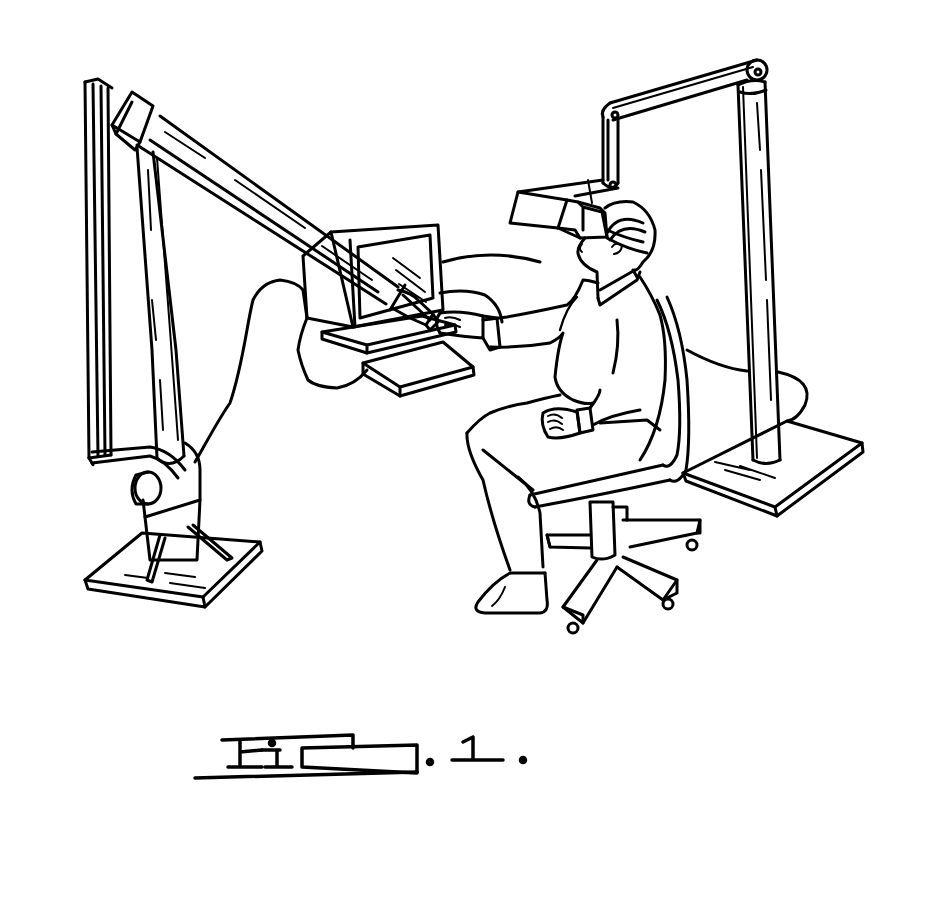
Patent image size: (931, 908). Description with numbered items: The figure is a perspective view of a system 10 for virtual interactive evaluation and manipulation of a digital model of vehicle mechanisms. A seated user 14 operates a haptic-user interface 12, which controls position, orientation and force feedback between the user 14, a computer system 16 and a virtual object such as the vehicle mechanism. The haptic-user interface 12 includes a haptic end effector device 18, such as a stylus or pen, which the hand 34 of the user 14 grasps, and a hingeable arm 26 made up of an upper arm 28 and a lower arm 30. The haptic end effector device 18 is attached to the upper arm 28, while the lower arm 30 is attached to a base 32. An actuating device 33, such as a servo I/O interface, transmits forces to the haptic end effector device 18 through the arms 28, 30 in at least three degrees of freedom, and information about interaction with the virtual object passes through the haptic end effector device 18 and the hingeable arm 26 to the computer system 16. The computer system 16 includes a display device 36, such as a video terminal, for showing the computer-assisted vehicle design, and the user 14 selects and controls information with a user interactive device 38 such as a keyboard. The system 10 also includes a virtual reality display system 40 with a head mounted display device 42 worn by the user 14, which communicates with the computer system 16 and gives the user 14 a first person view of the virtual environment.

The system 10 is at (412, 110).
The haptic-user interface 12 is at (267, 181).
The user 14 is at (663, 303).
The computer system 16 is at (384, 248).
The haptic end effector device 18 is at (432, 318).
The hingeable arm 26 is at (176, 109).
The upper arm 28 is at (263, 197).
The lower arm 30 is at (150, 248).
The base 32 is at (212, 583).
The actuating device 33 is at (130, 490).
The hand 34 is at (470, 313).
The display device 36 is at (423, 227).
The user interactive device 38 is at (385, 385).
The virtual reality display system 40 is at (663, 78).
The head mounted display device 42 is at (593, 197).